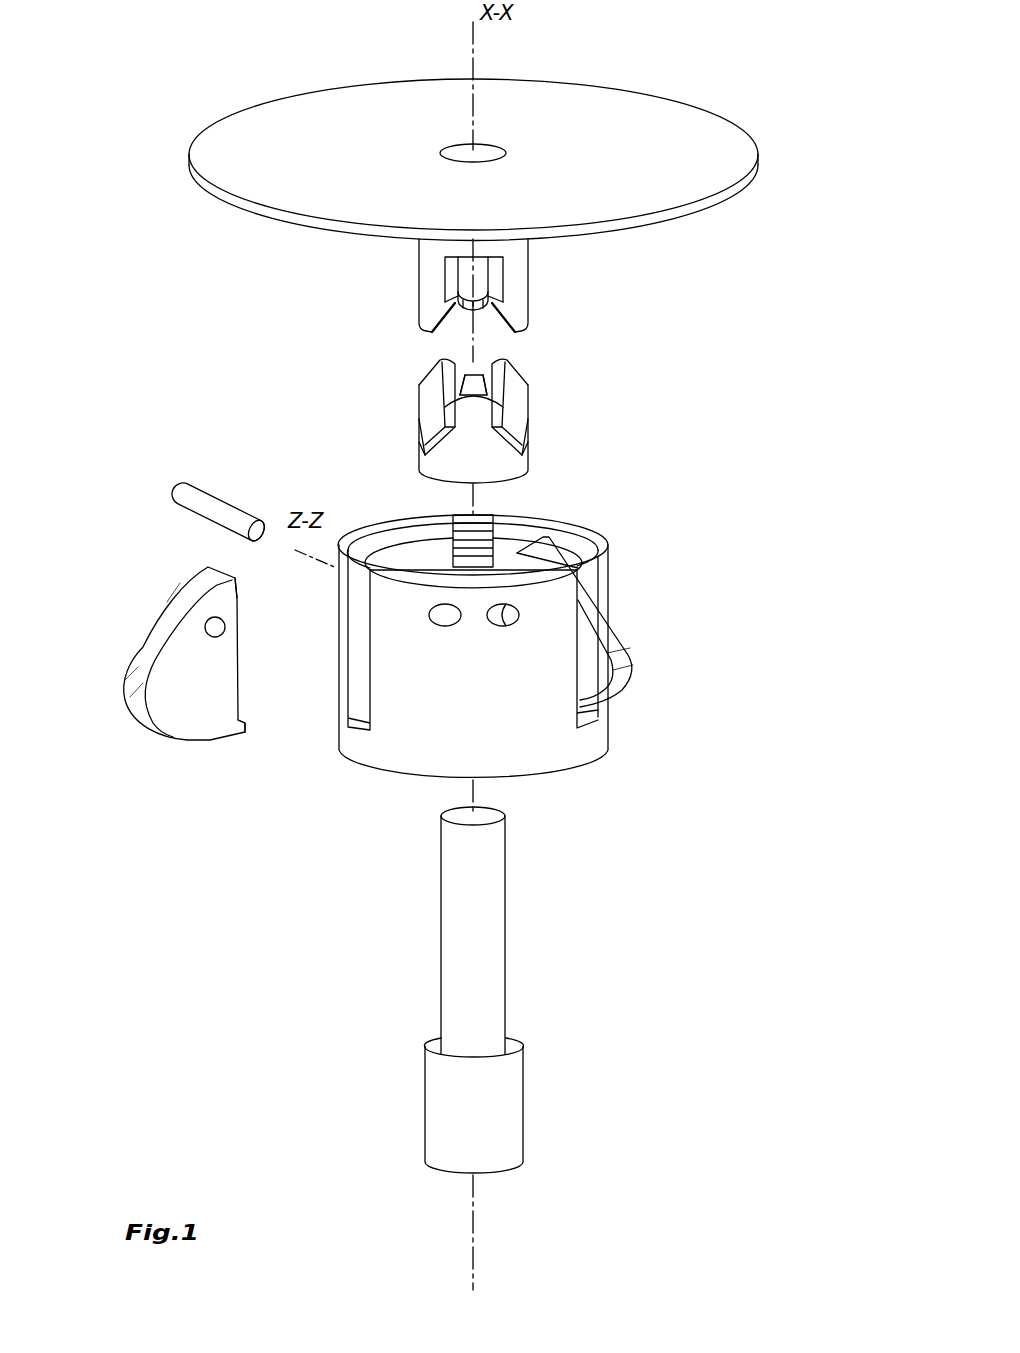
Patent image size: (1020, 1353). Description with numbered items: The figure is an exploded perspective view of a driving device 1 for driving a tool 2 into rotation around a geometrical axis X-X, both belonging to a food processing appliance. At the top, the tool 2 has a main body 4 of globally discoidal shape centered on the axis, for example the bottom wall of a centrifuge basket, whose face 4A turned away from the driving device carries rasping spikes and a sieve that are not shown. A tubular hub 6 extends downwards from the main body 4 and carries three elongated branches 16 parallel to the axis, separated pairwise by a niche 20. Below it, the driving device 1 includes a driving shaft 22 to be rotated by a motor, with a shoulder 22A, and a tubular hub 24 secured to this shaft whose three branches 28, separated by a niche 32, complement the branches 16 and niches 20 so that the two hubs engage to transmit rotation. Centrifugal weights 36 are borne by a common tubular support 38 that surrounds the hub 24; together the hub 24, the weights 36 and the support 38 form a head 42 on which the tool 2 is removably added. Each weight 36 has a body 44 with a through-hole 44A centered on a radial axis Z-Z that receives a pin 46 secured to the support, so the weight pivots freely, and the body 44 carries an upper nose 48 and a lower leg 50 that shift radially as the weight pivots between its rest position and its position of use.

The driving device 1 is at (319, 793).
The tool 2 is at (190, 208).
The main body 4 is at (186, 167).
The face 4A is at (618, 155).
The hub 6 is at (410, 258).
The branches 16 is at (433, 288).
The niche 20 is at (487, 276).
The driving shaft 22 is at (510, 915).
The shoulder 22A is at (512, 1048).
The hub 24 is at (542, 426).
The branches 28 is at (423, 415).
The niche 32 is at (438, 440).
The centrifugal weights 36 is at (609, 617).
The support 38 is at (619, 725).
The head 42 is at (781, 462).
The body 44 is at (190, 715).
The through-hole 44A is at (226, 627).
The pin 46 is at (207, 505).
The upper nose 48 is at (240, 582).
The lower leg 50 is at (246, 727).